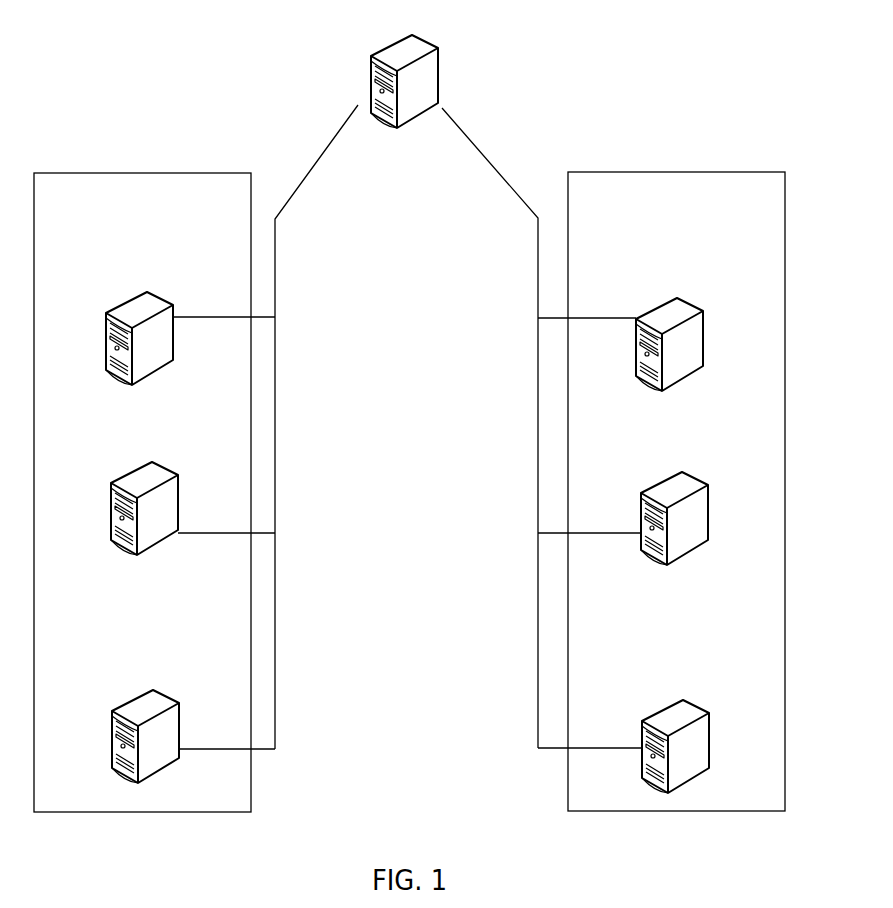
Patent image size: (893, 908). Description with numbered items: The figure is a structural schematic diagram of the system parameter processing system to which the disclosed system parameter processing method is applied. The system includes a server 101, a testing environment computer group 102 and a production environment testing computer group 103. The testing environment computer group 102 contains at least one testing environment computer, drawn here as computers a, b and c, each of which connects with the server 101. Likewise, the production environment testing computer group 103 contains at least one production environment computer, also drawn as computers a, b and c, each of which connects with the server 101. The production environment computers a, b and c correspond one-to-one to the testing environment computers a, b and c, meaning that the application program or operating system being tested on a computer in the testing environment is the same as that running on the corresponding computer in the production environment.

The server 101 is at (418, 37).
The testing environment computer group 102 is at (98, 173).
The production environment testing computer group 103 is at (631, 172).